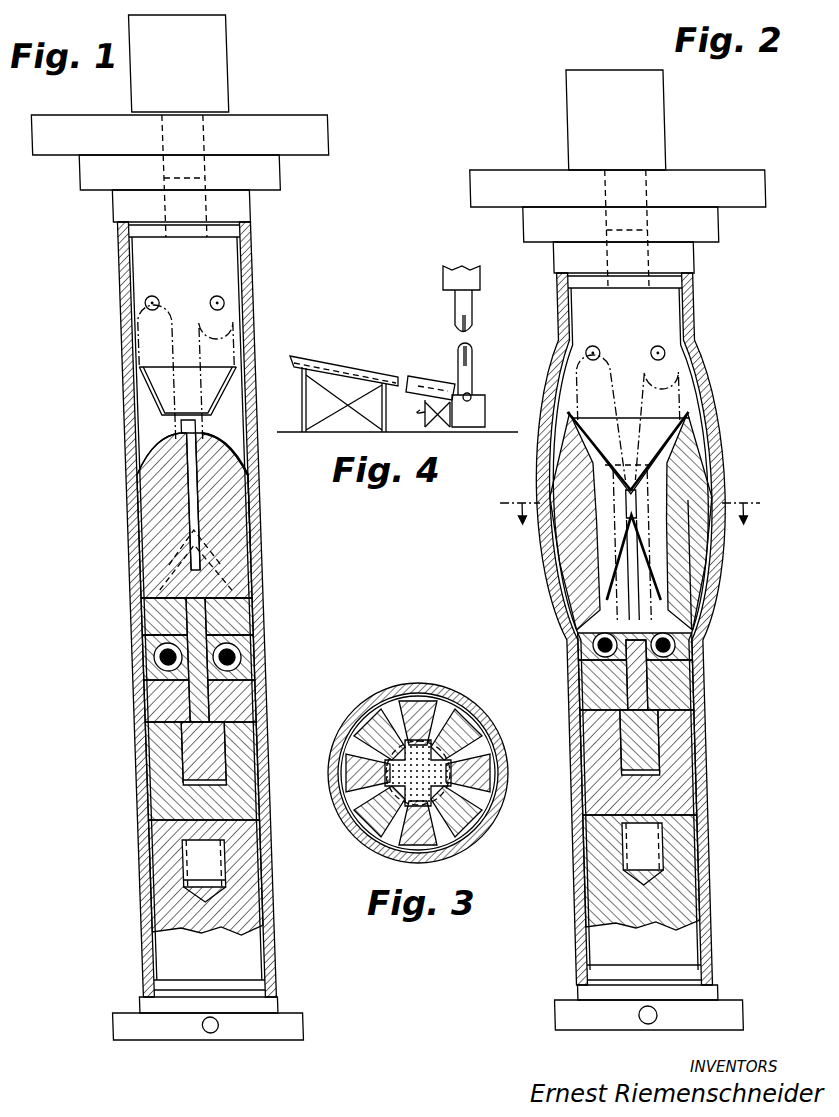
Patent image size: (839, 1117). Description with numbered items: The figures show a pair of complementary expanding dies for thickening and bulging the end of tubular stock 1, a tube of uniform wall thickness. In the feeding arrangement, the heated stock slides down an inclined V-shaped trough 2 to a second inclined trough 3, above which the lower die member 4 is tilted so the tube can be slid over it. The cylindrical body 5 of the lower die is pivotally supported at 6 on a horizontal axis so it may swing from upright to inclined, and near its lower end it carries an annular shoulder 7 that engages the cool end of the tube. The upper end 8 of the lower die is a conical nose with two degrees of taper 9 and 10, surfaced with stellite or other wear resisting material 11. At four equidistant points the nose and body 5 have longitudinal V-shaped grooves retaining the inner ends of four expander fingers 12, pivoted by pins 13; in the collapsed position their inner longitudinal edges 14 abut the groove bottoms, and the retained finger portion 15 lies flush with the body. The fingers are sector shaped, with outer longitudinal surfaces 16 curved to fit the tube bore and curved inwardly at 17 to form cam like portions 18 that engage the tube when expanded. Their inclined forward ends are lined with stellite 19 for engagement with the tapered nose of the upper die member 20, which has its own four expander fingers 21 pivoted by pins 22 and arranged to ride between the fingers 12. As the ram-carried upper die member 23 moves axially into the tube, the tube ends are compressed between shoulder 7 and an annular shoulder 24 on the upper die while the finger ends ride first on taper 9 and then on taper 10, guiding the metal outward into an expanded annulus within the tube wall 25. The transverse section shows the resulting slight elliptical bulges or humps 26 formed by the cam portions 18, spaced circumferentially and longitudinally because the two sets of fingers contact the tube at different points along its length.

In FIG. 1, the tubular stock 1 is at (236, 605).
In FIG. 4, the inclined V-shaped trough 2 is at (340, 368).
In FIG. 2, the second inclined trough 3 is at (630, 527).
In FIG. 4, the second inclined trough 3 is at (432, 382).
In FIG. 4, the lower die member 4 is at (475, 380).
In FIG. 1, the body of the lower die member 5 is at (230, 895).
In FIG. 2, the body of the lower die member 5 is at (680, 880).
In FIG. 1, the pivotal support 6 is at (180, 1033).
In FIG. 2, the pivotal support 6 is at (619, 1024).
In FIG. 1, the annular shoulder 7 is at (244, 1003).
In FIG. 1, the upper end of the lower die 8 is at (165, 540).
In FIG. 2, the upper end of the lower die 8 is at (580, 560).
In FIG. 2, the first taper 9 is at (650, 505).
In FIG. 2, the second taper 10 is at (690, 582).
In FIG. 2, the wear resisting material 11 is at (640, 490).
In FIG. 1, the expander fingers 12 is at (215, 545).
In FIG. 2, the expander fingers 12 is at (665, 605).
In FIG. 3, the expander fingers 12 is at (440, 705).
In FIG. 2, the pins 13 is at (660, 650).
In FIG. 3, the pins 13 is at (470, 765).
In FIG. 2, the inner longitudinal edges 14 is at (578, 623).
In FIG. 2, the plunger 15 is at (588, 648).
In FIG. 3, the outer longitudinal surfaces 16 is at (445, 775).
In FIG. 1, the inwardly curved portions 17 is at (215, 455).
In FIG. 1, the cam like portions 18 is at (226, 490).
In FIG. 1, the stellite lining 19 is at (130, 462).
In FIG. 2, the stellite lining 19 is at (660, 455).
In FIG. 1, the upper die member 20 is at (162, 383).
In FIG. 2, the upper die member 20 is at (672, 420).
In FIG. 4, the upper die member 20 is at (470, 310).
In FIG. 1, the expander fingers of the upper die 21 is at (127, 430).
In FIG. 2, the expander fingers of the upper die 21 is at (635, 629).
In FIG. 3, the expander fingers of the upper die 21 is at (360, 718).
In FIG. 1, the pins 22 is at (210, 303).
In FIG. 2, the upper die member carried by ram 23 is at (582, 130).
In FIG. 4, the upper die member carried by ram 23 is at (475, 278).
In FIG. 1, the annular shoulder 24 is at (245, 222).
In FIG. 2, the outer shell 25 is at (556, 440).
In FIG. 3, the outer shell 25 is at (338, 800).
In FIG. 3, the bulges or humps 26 is at (410, 692).